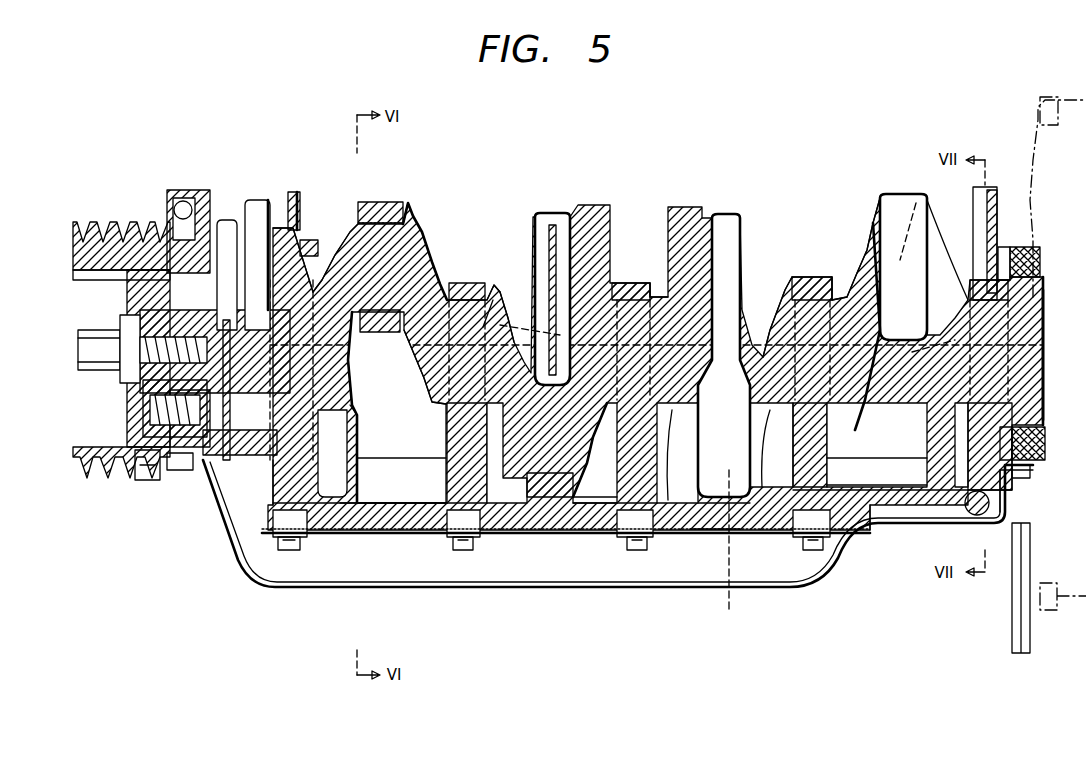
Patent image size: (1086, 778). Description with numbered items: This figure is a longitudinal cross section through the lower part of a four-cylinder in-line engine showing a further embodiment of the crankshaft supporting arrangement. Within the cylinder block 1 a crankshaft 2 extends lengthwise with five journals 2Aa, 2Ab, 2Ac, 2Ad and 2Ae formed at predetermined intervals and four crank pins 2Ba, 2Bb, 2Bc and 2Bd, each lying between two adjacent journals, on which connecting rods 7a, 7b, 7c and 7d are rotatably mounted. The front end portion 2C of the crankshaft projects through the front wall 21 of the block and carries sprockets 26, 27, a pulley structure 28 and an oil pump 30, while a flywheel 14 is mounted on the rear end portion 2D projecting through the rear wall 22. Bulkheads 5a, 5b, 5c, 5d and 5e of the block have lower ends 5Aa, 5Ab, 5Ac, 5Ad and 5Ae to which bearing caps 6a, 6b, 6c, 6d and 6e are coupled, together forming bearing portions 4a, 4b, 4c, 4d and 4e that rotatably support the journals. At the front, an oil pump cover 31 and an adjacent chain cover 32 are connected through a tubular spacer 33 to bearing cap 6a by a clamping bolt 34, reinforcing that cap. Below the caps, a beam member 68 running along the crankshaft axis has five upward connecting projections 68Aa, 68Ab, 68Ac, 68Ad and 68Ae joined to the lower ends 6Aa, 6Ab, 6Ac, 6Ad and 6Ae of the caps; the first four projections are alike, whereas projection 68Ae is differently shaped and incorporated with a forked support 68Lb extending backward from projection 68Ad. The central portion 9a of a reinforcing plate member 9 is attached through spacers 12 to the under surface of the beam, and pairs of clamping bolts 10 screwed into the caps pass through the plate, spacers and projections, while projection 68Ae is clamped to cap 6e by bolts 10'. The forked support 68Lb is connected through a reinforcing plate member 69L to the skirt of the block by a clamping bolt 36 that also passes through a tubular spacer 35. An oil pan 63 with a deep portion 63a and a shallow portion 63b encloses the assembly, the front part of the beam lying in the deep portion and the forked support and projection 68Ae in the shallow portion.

The cylinder block 1 is at (295, 185).
The crankshaft 2 is at (424, 226).
The journal 2Aa is at (326, 240).
The journal 2Ab is at (484, 325).
The journal 2Ac is at (494, 292).
The journal 2Ad is at (815, 326).
The journal 2Ae is at (960, 313).
The crank pin 2Ba is at (407, 220).
The crank pin 2Bb is at (548, 500).
The crank pin 2Bc is at (731, 550).
The crank pin 2Bd is at (919, 216).
The front end portion 2C is at (117, 372).
The rear end portion 2D is at (1044, 356).
The bearing portion 4a is at (297, 230).
The bearing portion 4b is at (474, 283).
The bearing portion 4c is at (641, 283).
The bearing portion 4d is at (814, 275).
The bearing portion 4e is at (1048, 286).
The bulkhead 5a is at (306, 262).
The bulkhead 5b is at (460, 283).
The bulkhead 5c is at (625, 283).
The bulkhead 5d is at (805, 280).
The bulkhead 5e is at (978, 282).
The lower end of bulkhead 5Aa is at (354, 368).
The lower end of bulkhead 5Ab is at (447, 348).
The lower end of bulkhead 5Ac is at (530, 313).
The lower end of bulkhead 5Ad is at (868, 360).
The lower end of bulkhead 5Ae is at (918, 349).
The bearing cap 6a is at (356, 420).
The bearing cap 6b is at (447, 430).
The bearing cap 6c is at (667, 447).
The bearing cap 6d is at (832, 438).
The bearing cap 6e is at (1010, 415).
The lower end of bearing cap 6Aa is at (349, 440).
The lower end of bearing cap 6Ab is at (445, 449).
The lower end of bearing cap 6Ac is at (625, 466).
The lower end of bearing cap 6Ad is at (790, 452).
The lower end of bearing cap 6Ae is at (1046, 445).
The connecting rod 7a is at (383, 200).
The connecting rod 7b is at (543, 225).
The connecting rod 7c is at (726, 225).
The connecting rod 7d is at (895, 205).
The reinforcing plate member 9 is at (425, 552).
The central portion of reinforcing plate member 9a is at (705, 533).
The clamping bolt 10 is at (550, 561).
The clamping bolt 10' is at (1044, 494).
The spacer 12 is at (808, 533).
The flywheel 14 is at (1049, 375).
The front wall 21 is at (265, 230).
The rear wall 22 is at (993, 252).
The sprocket 26 is at (226, 232).
The sprocket 27 is at (253, 202).
The pulley structure 28 is at (118, 472).
The oil pump 30 is at (190, 470).
The oil pump cover 31 is at (218, 490).
The chain cover 32 is at (195, 474).
The tubular spacer 33 is at (234, 458).
The clamping bolt 34 is at (141, 482).
The tubular spacer 35 is at (991, 528).
The clamping bolt 36 is at (972, 514).
The oil pan 63 is at (250, 585).
The deep portion of oil pan 63a is at (340, 588).
The shallow portion of oil pan 63b is at (890, 525).
The beam member 68 is at (385, 533).
The connecting projection 68Aa is at (285, 487).
The connecting projection 68Ab is at (445, 480).
The connecting projection 68Ac is at (605, 533).
The connecting projection 68Ad is at (848, 480).
The connecting projection 68Ae is at (893, 422).
The forked support 68Lb is at (876, 522).
The reinforcing plate member 69L is at (853, 460).